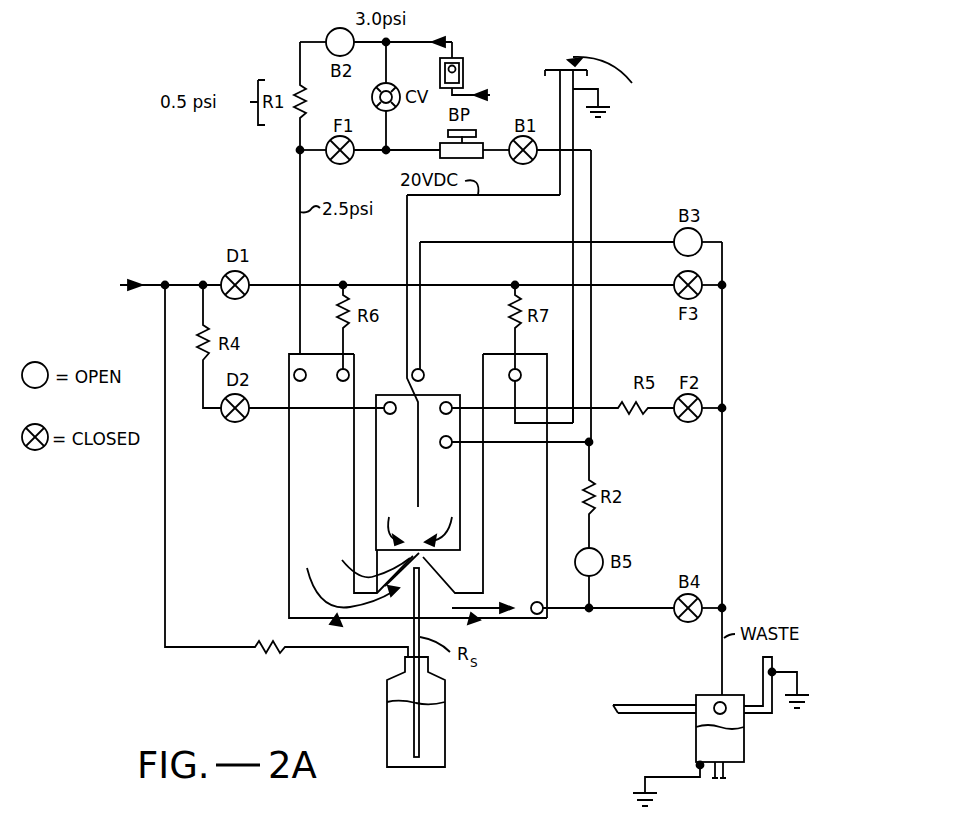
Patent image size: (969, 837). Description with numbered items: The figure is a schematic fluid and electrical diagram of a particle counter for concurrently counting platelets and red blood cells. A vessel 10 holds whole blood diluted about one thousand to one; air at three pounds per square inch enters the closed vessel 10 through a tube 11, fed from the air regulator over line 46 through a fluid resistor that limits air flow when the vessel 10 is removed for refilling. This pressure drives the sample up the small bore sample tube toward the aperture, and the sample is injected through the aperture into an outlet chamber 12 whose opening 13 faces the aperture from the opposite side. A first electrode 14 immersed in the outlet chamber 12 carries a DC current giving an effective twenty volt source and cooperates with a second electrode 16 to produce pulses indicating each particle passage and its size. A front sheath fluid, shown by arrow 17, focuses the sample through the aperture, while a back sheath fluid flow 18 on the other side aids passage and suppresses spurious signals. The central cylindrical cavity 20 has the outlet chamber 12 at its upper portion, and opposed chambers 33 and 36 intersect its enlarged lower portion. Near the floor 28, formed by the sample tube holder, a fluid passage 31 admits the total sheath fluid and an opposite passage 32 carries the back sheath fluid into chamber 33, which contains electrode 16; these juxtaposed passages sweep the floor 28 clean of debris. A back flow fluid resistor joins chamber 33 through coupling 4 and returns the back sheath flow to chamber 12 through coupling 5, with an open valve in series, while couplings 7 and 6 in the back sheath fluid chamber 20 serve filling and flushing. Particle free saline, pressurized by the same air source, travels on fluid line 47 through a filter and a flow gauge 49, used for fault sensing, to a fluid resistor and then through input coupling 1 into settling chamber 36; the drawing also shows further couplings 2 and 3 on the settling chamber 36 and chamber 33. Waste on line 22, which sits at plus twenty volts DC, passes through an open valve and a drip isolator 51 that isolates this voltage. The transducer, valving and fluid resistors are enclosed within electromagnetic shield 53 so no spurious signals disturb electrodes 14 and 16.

The vessel 10 is at (446, 722).
The tube 11 is at (310, 652).
The outlet chamber 12 is at (432, 384).
The opening 13 is at (399, 536).
The first electrode 14 is at (405, 257).
The second electrode 16 is at (573, 326).
The front sheath fluid 17 is at (313, 586).
The back sheath fluid flow 18 is at (432, 541).
The central cylindrical cavity 20 is at (409, 482).
The waste line 22 is at (421, 323).
The floor 28 is at (413, 614).
The fluid passage 31 is at (337, 620).
The passage 32 is at (474, 618).
The chamber 33 is at (528, 501).
The settling chamber 36 is at (330, 518).
The line 46 is at (150, 284).
The fluid line 47 is at (424, 38).
The flow gauge 49 is at (465, 75).
The drip isolator 51 is at (746, 742).
The electromagnetic shield 53 is at (660, 713).
The input coupling 1 is at (300, 386).
The contact 2 is at (343, 386).
The contact 3 is at (515, 386).
The coupling 4 is at (537, 598).
The coupling 5 is at (446, 451).
The coupling 6 is at (446, 396).
The coupling 7 is at (390, 396).